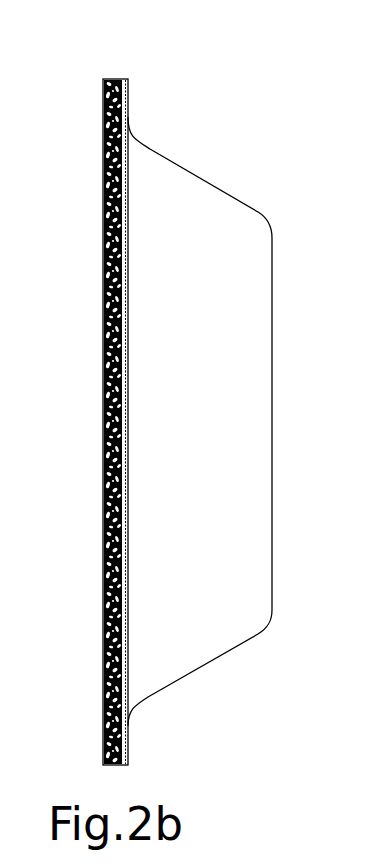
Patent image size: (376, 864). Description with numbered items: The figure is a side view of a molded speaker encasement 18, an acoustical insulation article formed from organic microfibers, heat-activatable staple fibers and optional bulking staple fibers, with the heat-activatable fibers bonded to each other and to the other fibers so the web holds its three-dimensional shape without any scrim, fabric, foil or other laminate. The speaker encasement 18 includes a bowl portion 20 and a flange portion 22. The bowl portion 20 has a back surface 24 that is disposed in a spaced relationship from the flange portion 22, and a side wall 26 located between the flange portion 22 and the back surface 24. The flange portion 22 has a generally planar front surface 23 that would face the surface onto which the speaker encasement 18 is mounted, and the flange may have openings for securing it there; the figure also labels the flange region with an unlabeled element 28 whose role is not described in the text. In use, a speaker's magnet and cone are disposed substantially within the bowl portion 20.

The speaker encasement 18 is at (233, 720).
The bowl portion 20 is at (215, 215).
The flange portion 22 is at (113, 78).
The front surface 23 is at (105, 98).
The back surface 24 is at (272, 328).
The side wall 26 is at (193, 178).
The inner layer of core 28 is at (105, 160).